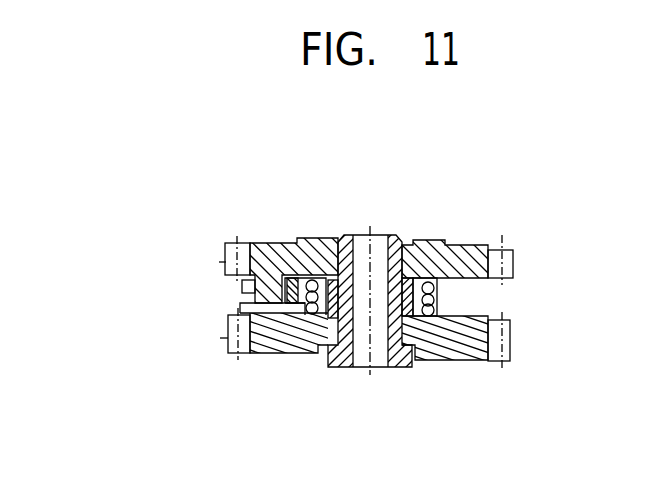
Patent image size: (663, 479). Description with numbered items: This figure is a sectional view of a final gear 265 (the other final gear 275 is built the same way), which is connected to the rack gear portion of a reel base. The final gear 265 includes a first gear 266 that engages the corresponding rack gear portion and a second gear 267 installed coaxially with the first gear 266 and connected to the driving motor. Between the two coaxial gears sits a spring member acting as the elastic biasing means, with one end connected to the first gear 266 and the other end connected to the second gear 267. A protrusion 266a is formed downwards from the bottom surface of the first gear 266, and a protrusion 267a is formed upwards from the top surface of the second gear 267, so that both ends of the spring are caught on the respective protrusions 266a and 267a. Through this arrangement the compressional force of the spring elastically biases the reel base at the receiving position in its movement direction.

The final gear 265 is at (135, 276).
The final gear 275 is at (321, 289).
The first gear 266 is at (242, 263).
The protrusion 266a is at (268, 255).
The second gear 267 is at (228, 334).
The protrusion 267a is at (300, 303).